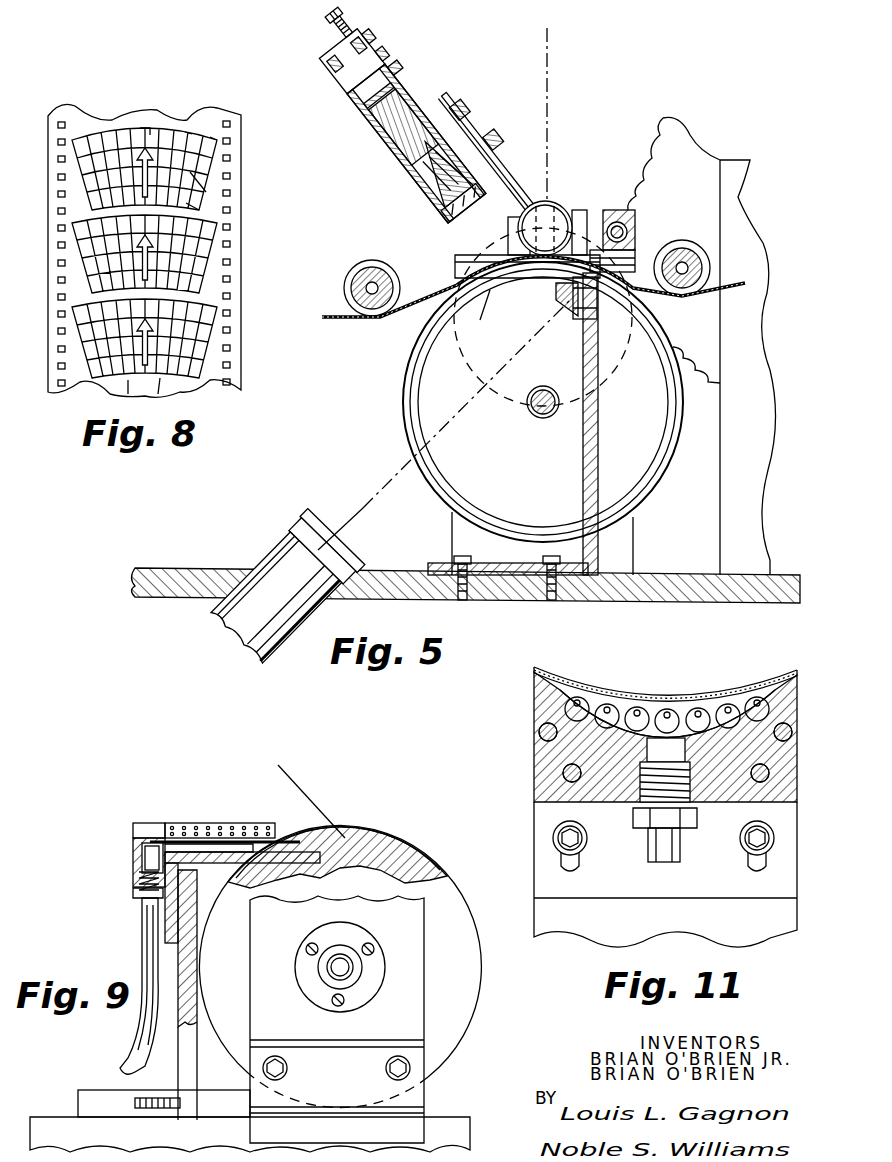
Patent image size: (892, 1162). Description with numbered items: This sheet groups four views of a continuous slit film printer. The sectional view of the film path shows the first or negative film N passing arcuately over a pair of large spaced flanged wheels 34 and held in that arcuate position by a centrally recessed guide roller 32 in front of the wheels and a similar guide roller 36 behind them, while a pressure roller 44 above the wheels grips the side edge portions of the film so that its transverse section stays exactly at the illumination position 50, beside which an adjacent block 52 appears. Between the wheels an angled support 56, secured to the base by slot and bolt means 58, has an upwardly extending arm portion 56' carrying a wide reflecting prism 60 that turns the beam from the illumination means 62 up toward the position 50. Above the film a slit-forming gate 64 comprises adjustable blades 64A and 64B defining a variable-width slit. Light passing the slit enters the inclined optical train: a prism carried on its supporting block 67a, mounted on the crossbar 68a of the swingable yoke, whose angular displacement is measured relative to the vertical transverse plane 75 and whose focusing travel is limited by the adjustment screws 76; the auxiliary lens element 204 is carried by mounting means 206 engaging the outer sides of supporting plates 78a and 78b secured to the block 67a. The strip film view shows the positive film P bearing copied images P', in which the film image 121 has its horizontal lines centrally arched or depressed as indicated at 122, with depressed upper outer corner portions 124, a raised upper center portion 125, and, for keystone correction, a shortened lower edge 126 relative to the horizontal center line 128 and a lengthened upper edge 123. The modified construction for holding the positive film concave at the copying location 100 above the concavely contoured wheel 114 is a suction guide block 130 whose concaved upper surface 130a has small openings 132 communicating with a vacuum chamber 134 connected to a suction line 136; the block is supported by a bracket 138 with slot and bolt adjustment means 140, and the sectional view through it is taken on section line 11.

In FIG. 8, the second or positive film P is at (156, 250).
In FIG. 11, the second or positive film P is at (665, 676).
In FIG. 8, the copied film image P' is at (173, 253).
In FIG. 8, the film image 121 is at (190, 130).
In FIG. 8, the centrally arched or depressed lines 122 is at (143, 390).
In FIG. 8, the upper edge of the image 123 is at (110, 128).
In FIG. 8, the depressed upper outer corner portions 124 is at (218, 143).
In FIG. 8, the raised upper center portion 125 is at (146, 127).
In FIG. 8, the lower edge of the image 126 is at (194, 206).
In FIG. 8, the horizontal center line 128 is at (198, 178).
In FIG. 5, the guide roller 32 is at (365, 262).
In FIG. 5, the flanged wheels 34 is at (667, 470).
In FIG. 5, the guide roller 36 is at (683, 250).
In FIG. 5, the pressure rollers 44 is at (550, 208).
In FIG. 5, the illumination position 50 is at (539, 270).
In FIG. 5, the roller mount block 52 is at (614, 212).
In FIG. 5, the angled support 56 is at (466, 567).
In FIG. 5, the upwardly extending arm portion 56' is at (582, 402).
In FIG. 5, the slot and bolt means 58 is at (543, 561).
In FIG. 5, the reflecting prism 60 is at (558, 306).
In FIG. 5, the illumination means 62 is at (278, 555).
In FIG. 5, the film gate 64 is at (455, 267).
In FIG. 5, the adjustable blade 64A is at (482, 315).
In FIG. 5, the adjustable blade 64B is at (606, 300).
In FIG. 5, the prism supporting means 67a is at (412, 116).
In FIG. 5, the crossbar of the yoke 68a is at (395, 70).
In FIG. 5, the vertical transverse plane 75 is at (556, 90).
In FIG. 5, the adjustment screws 76 is at (348, 22).
In FIG. 5, the supporting plate 78a is at (388, 134).
In FIG. 5, the supporting plate 78b is at (452, 99).
In FIG. 5, the auxiliary lens element 204 is at (472, 230).
In FIG. 5, the mounting means 206 is at (440, 212).
In FIG. 5, the first or negative film N is at (735, 283).
In FIG. 9, the section line 11- 11 is at (166, 803).
In FIG. 9, the copying location 100 is at (346, 836).
In FIG. 9, the concavely contoured compound wheel 114 is at (435, 1062).
In FIG. 11, the suction guide block 130 is at (534, 752).
In FIG. 9, the upper surface 130a is at (208, 823).
In FIG. 9, the small openings 132 is at (250, 825).
In FIG. 9, the vacuum chamber 134 is at (220, 864).
In FIG. 11, the vacuum chamber 134 is at (566, 712).
In FIG. 9, the suction line 136 is at (143, 906).
In FIG. 9, the bracket 138 is at (186, 1062).
In FIG. 9, the slot and bolt adjustment means 140 is at (336, 1068).
In FIG. 11, the slot and bolt adjustment means 140 is at (588, 856).